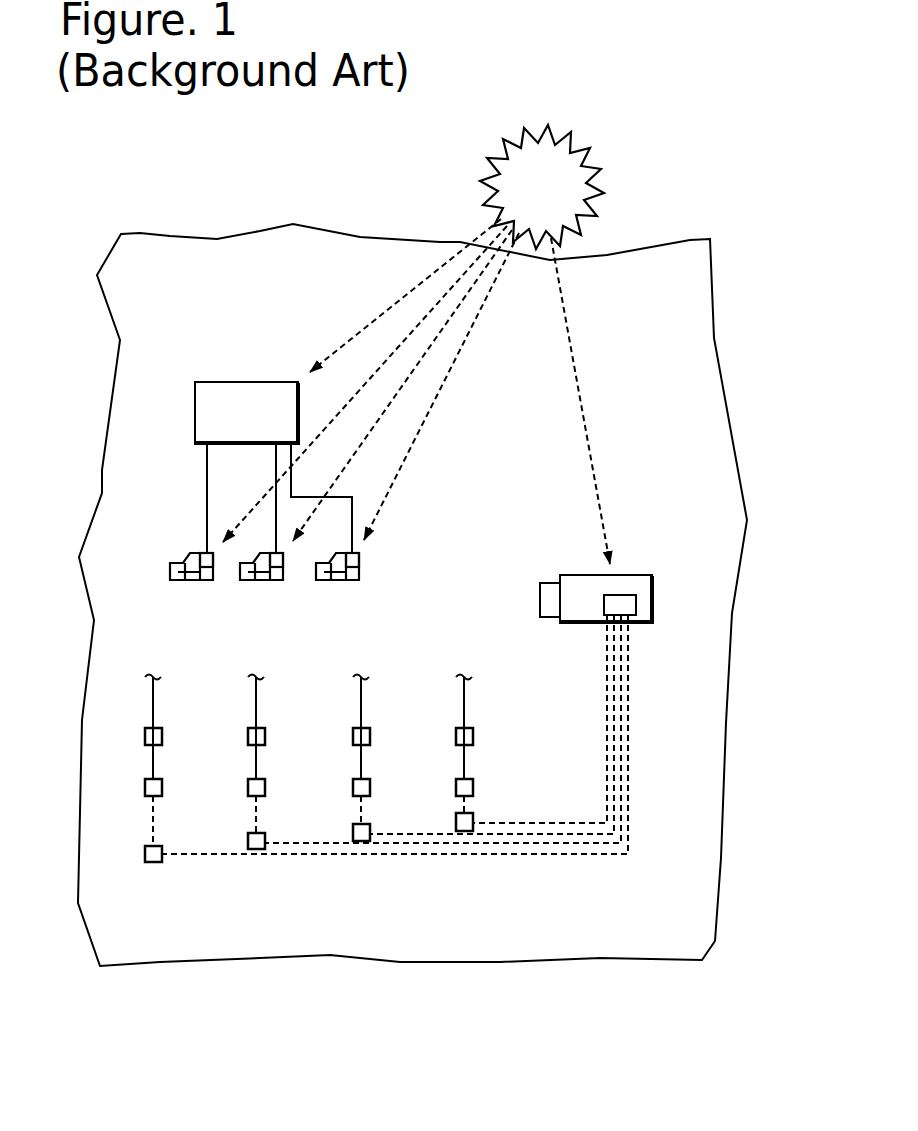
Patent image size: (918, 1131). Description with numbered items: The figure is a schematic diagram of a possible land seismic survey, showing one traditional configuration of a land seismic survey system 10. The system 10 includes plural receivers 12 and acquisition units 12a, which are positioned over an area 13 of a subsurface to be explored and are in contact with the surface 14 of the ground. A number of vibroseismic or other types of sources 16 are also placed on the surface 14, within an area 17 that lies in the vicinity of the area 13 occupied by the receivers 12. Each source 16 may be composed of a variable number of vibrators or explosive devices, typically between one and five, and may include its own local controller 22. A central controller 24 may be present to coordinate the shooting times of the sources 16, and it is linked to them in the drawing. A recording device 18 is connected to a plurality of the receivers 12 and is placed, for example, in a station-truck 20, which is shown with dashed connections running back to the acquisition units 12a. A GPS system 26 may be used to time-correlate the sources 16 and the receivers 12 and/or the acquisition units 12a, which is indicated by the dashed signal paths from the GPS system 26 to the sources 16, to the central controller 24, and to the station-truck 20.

The land seismic survey system 10 is at (336, 175).
The receivers 12 is at (145, 734).
The acquisition units 12a is at (150, 860).
The area of a subsurface to be explored 13 is at (689, 858).
The surface of the ground 14 is at (70, 588).
The sources 16 is at (190, 583).
The area 17 is at (705, 443).
The recording device 18 is at (628, 607).
The station-truck 20 is at (645, 565).
The local controller 22 is at (205, 582).
The central controller 24 is at (212, 382).
The GPS system 26 is at (580, 140).